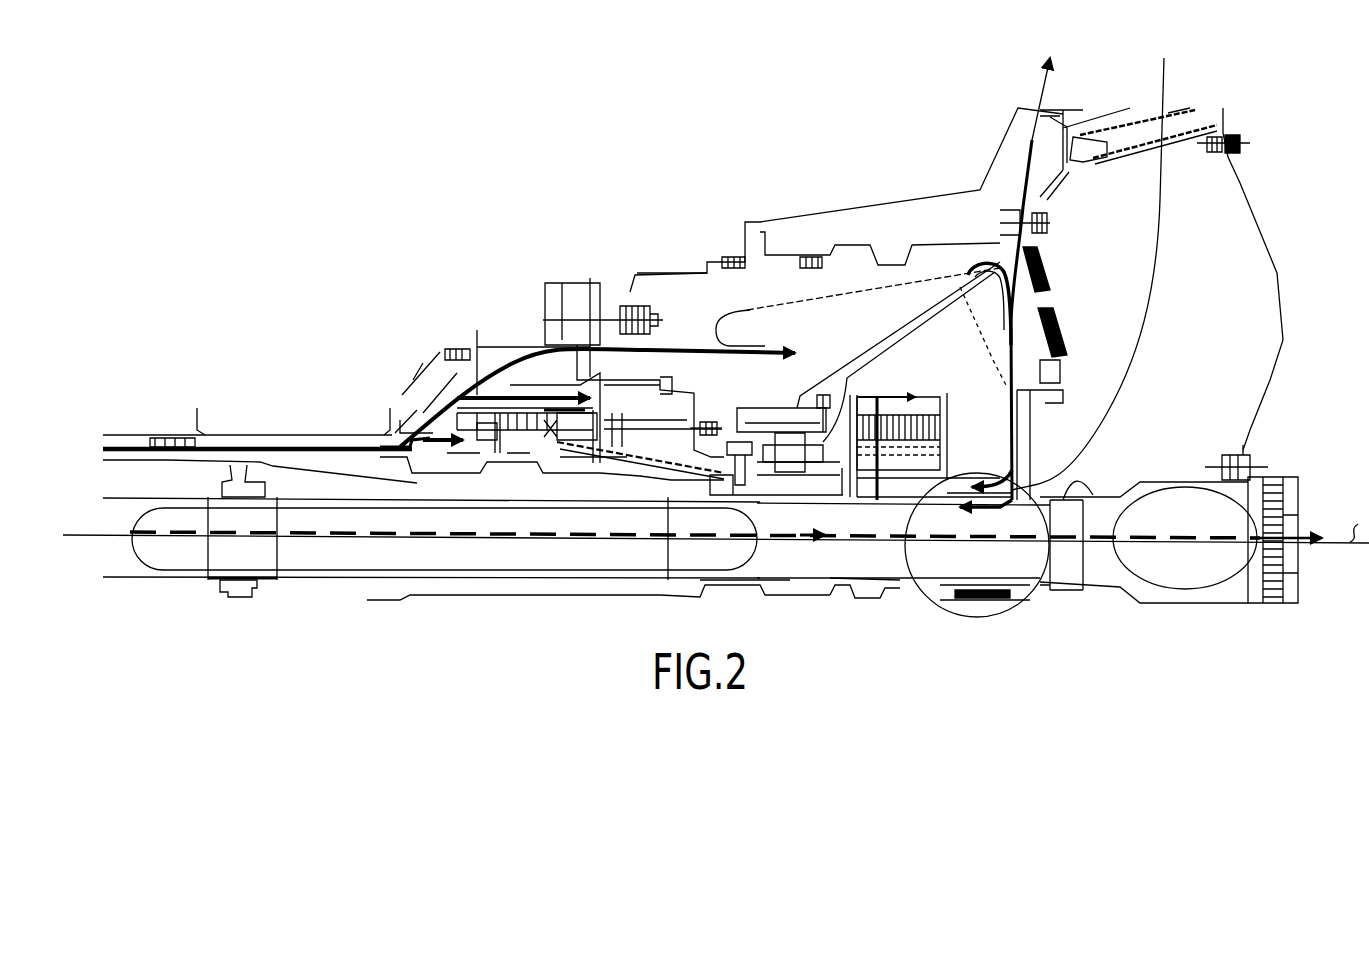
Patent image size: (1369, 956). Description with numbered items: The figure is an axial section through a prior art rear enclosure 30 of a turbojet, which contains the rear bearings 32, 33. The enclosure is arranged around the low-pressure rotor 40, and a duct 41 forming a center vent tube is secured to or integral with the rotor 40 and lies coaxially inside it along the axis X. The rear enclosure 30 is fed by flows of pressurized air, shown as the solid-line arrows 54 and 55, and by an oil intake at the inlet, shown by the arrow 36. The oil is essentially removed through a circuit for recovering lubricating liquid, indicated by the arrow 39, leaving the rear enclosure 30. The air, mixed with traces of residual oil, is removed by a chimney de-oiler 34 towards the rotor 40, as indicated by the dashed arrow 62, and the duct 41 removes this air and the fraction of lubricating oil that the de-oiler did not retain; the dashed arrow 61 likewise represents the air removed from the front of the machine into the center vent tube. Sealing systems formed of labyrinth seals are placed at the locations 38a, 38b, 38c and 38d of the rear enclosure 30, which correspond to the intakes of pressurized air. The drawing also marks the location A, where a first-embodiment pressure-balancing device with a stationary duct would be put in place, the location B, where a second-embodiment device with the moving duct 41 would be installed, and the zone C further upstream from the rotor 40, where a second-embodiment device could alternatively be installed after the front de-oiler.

The rear enclosure 30 is at (857, 331).
The rear bearing 32 is at (827, 395).
The rear bearing 33 is at (493, 447).
The chimney de-oiler 34 is at (945, 410).
The oil intake arrow 36 is at (1165, 82).
The labyrinth seal location 38a is at (448, 447).
The labyrinth seal location 38b is at (482, 355).
The labyrinth seal location 38c is at (757, 341).
The labyrinth seal location 38d is at (1060, 493).
The lubricating liquid recovery arrow 39 is at (1040, 90).
The low-pressure rotor 40 is at (827, 582).
The duct 41 is at (787, 562).
The pressurized air flow arrow 54 is at (305, 440).
The pressurized air flow arrow 55 is at (947, 325).
The air removal arrow 61 is at (333, 535).
The air removal arrow 62 is at (946, 458).
The location A is at (1160, 587).
The location B is at (947, 607).
The zone C is at (147, 567).
The axis X is at (92, 538).